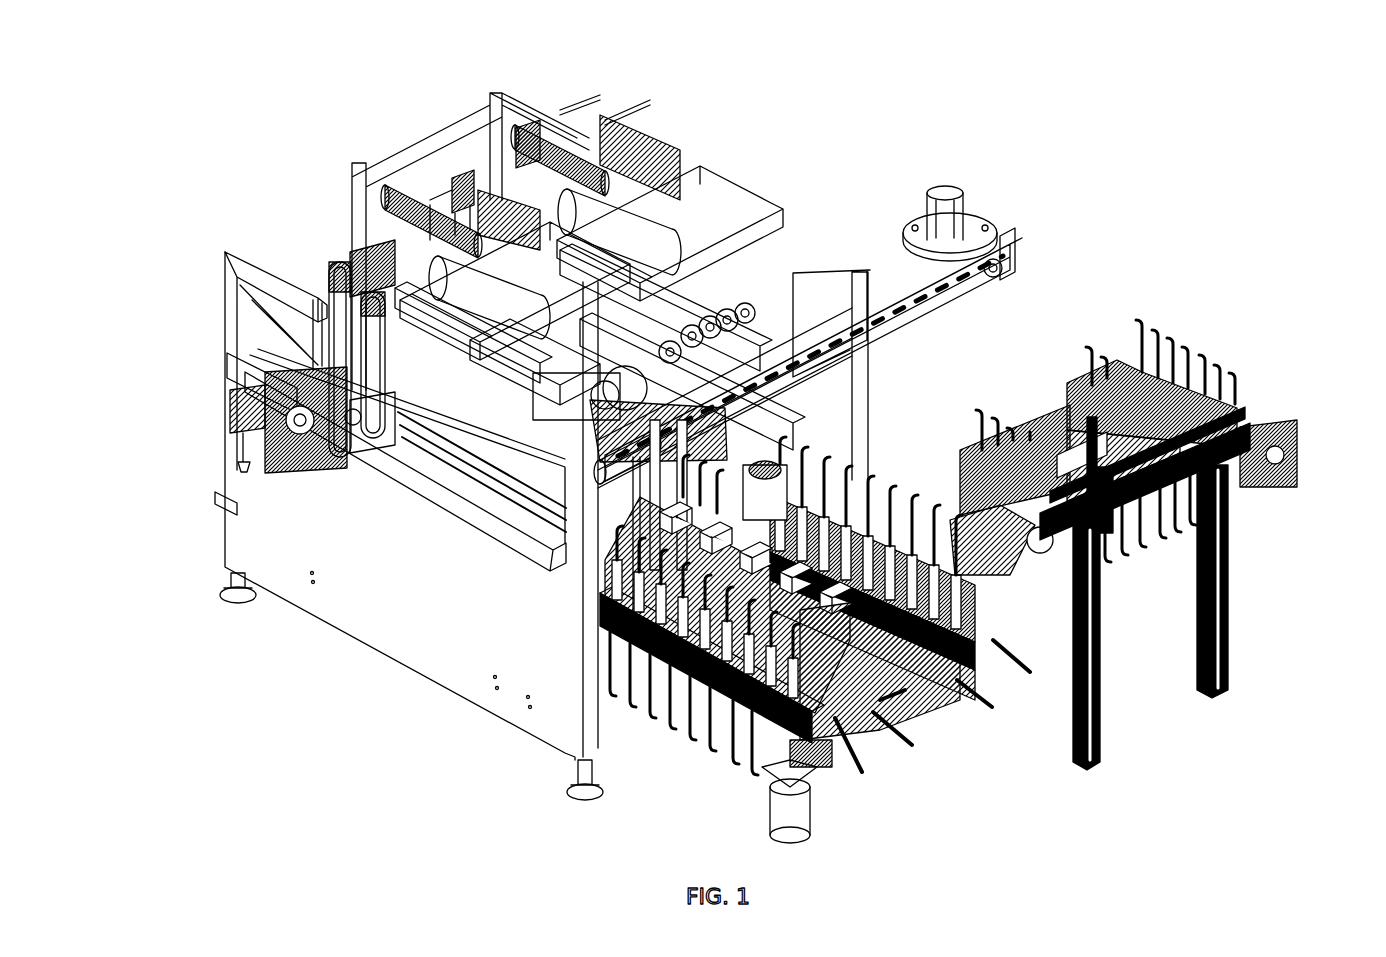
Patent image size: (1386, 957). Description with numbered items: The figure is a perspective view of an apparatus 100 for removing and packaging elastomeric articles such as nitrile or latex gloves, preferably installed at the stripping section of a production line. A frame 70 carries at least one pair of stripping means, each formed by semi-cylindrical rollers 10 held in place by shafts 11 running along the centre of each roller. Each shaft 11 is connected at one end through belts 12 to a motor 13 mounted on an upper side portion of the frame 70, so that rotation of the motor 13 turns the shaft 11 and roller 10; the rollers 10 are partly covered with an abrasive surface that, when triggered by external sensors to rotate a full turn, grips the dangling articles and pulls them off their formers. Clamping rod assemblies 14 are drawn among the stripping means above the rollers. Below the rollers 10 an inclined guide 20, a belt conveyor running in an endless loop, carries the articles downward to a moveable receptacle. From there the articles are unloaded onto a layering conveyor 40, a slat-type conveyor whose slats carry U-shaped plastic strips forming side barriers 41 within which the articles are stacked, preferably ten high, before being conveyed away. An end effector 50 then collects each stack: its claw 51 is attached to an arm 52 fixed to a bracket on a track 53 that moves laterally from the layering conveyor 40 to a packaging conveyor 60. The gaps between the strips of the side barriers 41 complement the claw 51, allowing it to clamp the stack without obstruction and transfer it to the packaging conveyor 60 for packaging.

The apparatus 100 is at (1295, 212).
The semi-cylindrical roller 10 is at (528, 143).
The shaft 11 is at (363, 262).
The belt 12 is at (333, 350).
The motor 13 is at (300, 460).
The clamping rod assembly 14 is at (440, 197).
The inclined guide 20 is at (457, 257).
The layering conveyor 40 is at (737, 723).
The side barrier 41 is at (910, 740).
The end effector 50 is at (878, 478).
The claw 51 is at (947, 188).
The arm 52 is at (615, 608).
The track 53 is at (888, 300).
The packaging conveyor 60 is at (1197, 508).
The frame 70 is at (427, 648).